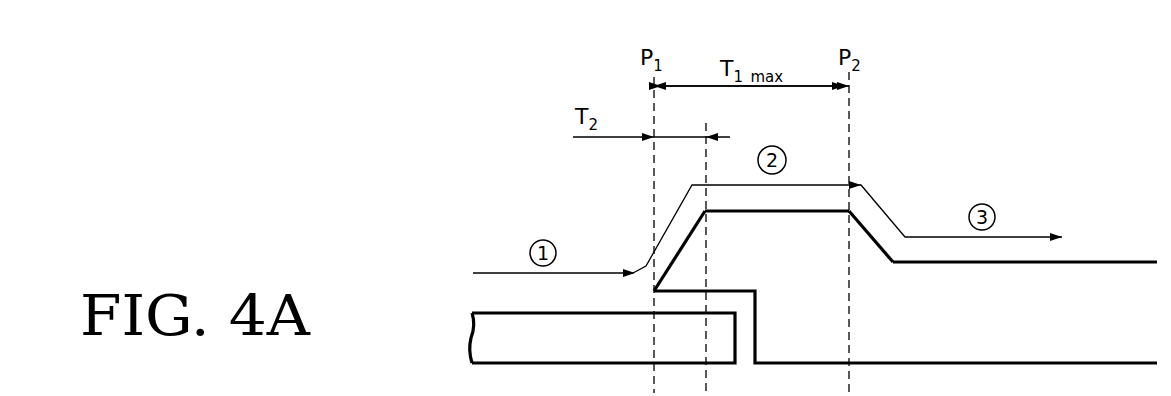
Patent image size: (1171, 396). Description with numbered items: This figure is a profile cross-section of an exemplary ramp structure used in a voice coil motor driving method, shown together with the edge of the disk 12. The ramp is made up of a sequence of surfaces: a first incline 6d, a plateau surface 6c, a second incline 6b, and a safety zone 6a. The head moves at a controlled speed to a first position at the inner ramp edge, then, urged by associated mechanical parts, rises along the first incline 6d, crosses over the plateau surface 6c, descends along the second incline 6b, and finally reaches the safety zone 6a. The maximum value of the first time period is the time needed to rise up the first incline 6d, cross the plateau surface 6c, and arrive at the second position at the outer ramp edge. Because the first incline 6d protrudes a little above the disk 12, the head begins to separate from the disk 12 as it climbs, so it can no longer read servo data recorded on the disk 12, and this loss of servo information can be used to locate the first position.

The safety zone 6a is at (1118, 262).
The second incline 6b is at (878, 246).
The plateau surface 6c is at (810, 212).
The first incline 6d is at (687, 243).
The disk 12 is at (472, 343).